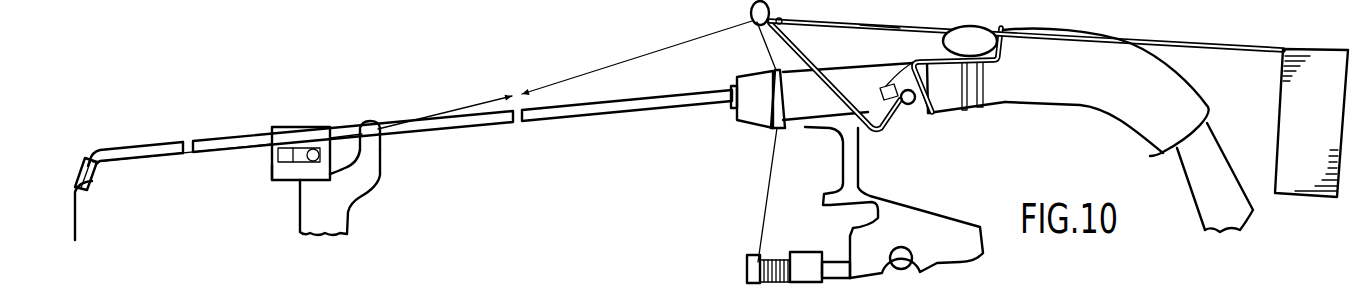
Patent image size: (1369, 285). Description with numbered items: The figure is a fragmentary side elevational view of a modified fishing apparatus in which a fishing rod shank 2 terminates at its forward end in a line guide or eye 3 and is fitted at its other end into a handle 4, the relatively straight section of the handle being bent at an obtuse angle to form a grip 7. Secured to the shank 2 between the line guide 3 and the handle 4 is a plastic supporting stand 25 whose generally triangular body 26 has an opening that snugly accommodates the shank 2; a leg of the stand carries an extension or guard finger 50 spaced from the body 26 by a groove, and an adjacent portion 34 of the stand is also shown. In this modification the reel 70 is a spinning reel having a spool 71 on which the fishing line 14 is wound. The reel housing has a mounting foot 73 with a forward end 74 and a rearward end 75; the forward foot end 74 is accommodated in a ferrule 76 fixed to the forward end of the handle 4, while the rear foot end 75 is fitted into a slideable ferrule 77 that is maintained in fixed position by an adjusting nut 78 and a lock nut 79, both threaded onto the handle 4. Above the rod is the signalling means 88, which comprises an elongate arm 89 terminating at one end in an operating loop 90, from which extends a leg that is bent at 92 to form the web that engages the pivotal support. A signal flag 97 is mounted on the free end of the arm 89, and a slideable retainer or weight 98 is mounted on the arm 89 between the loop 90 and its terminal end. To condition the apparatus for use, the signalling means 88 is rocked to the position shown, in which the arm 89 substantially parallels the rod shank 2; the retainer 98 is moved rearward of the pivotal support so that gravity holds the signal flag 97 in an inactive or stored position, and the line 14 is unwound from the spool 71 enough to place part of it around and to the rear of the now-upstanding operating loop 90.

The shank 2 is at (663, 107).
The line guide 3 is at (97, 181).
The handle 4 is at (863, 75).
The grip 7 is at (1205, 208).
The fishing line 14 is at (762, 207).
The supporting stand 25 is at (385, 196).
The body 26 is at (272, 176).
The slide housing 34 is at (296, 128).
The guard finger 50 is at (369, 126).
The reel 70 is at (989, 258).
The spool 71 is at (747, 259).
The mounting foot 73 is at (830, 131).
The forward foot end 74 is at (795, 120).
The rearward foot end 75 is at (897, 110).
The ferrule 76 is at (757, 121).
The slideable ferrule 77 is at (948, 106).
The adjusting nut 78 is at (977, 106).
The lock nut 79 is at (992, 107).
The signalling means 88 is at (871, 23).
The arm 89 is at (848, 36).
The operating loop 90 is at (750, 13).
The bend 92 is at (876, 136).
The signal flag 97 is at (1306, 194).
The retainer 98 is at (981, 30).